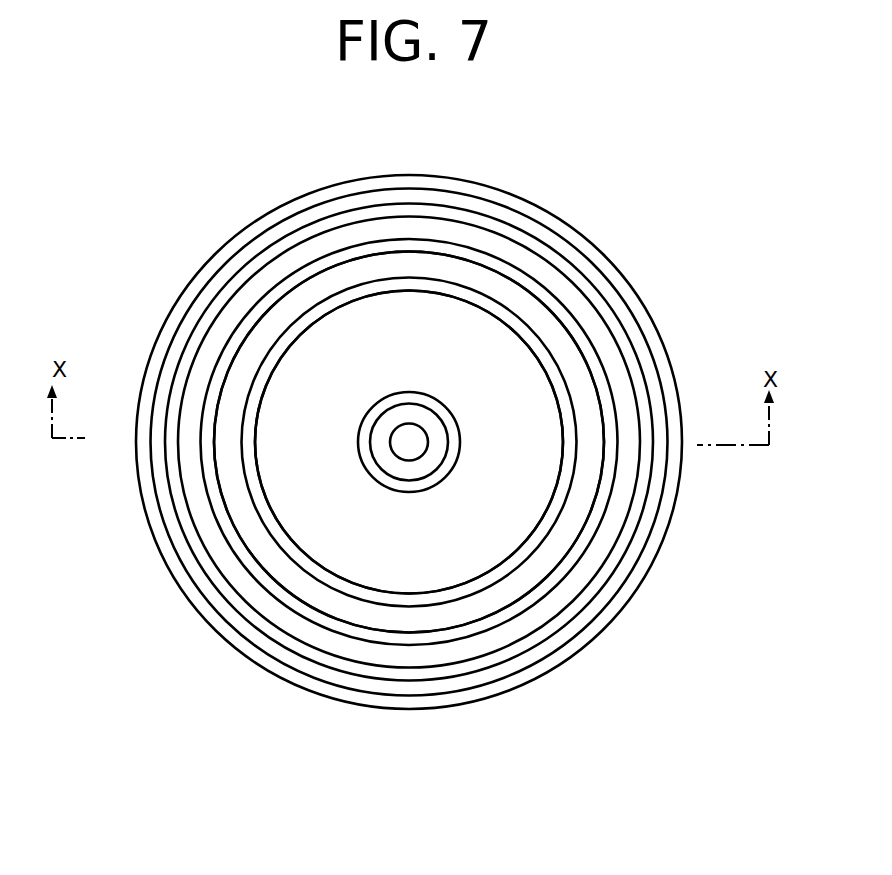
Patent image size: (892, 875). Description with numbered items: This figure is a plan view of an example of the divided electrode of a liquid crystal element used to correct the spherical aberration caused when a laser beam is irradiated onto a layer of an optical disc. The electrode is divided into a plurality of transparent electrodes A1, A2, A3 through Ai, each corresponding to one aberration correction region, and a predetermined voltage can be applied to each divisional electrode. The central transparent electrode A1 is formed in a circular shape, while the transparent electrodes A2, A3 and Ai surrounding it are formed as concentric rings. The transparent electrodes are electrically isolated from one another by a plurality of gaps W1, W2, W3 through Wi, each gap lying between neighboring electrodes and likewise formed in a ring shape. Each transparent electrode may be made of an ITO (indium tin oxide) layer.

The transparent electrode A1 is at (438, 446).
The gap W1 is at (450, 420).
The transparent electrode A2 is at (500, 337).
The transparent electrode A3 is at (560, 337).
The transparent electrode Ai is at (632, 335).
The gap W2 is at (570, 472).
The gap W3 is at (597, 525).
The gap Wi is at (603, 578).